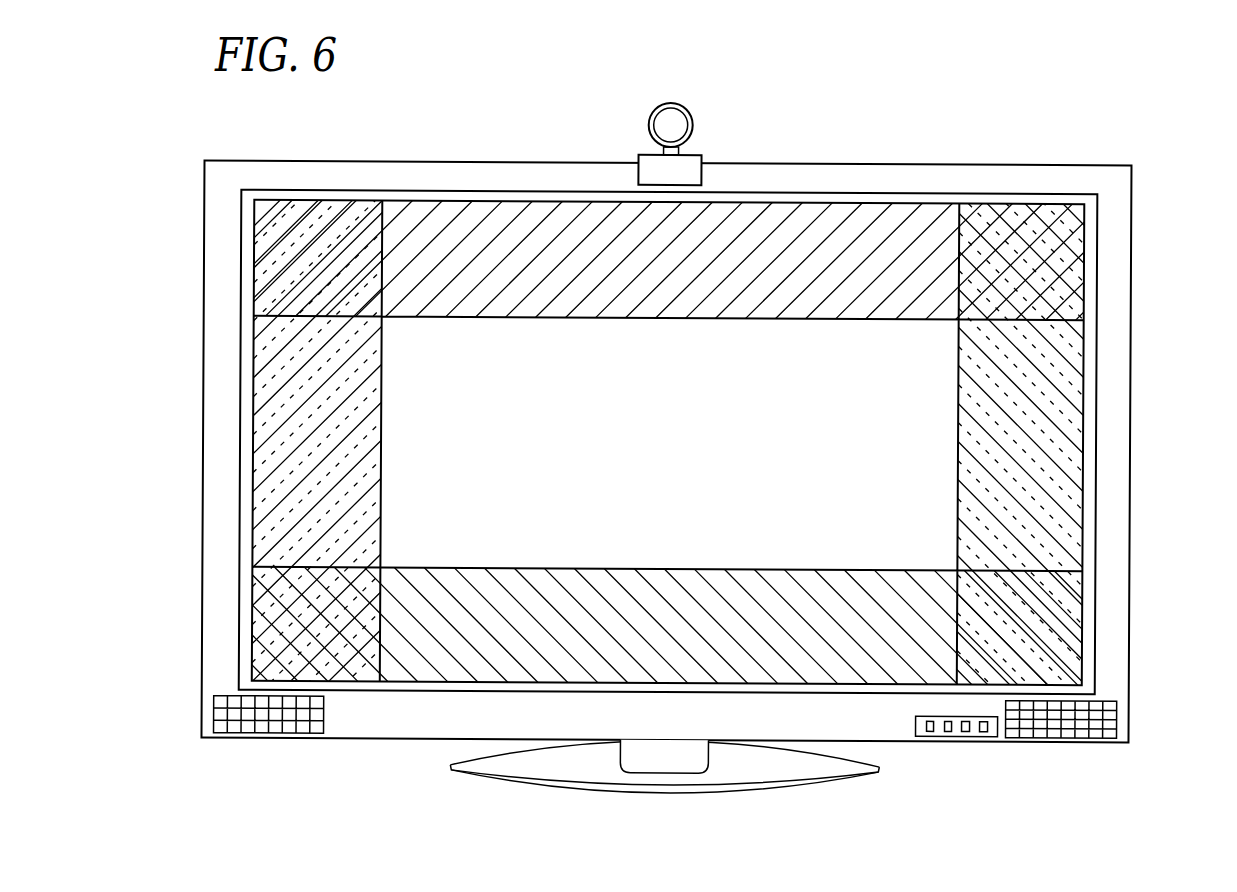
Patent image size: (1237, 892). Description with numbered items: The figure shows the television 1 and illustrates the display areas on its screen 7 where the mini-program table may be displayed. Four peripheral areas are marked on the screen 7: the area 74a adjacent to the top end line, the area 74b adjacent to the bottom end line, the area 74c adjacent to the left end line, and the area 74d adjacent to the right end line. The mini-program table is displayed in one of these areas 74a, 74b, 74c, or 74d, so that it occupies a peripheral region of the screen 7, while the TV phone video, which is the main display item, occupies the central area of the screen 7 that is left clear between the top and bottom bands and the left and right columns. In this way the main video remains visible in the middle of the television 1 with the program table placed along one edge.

The television receiver 1 is at (676, 424).
The screen 7 is at (676, 445).
The area adjacent to the top end line 74a is at (667, 318).
The area adjacent to the bottom end line 74b is at (667, 569).
The area adjacent to the left end line 74c is at (381, 426).
The area adjacent to the right end line 74d is at (958, 430).